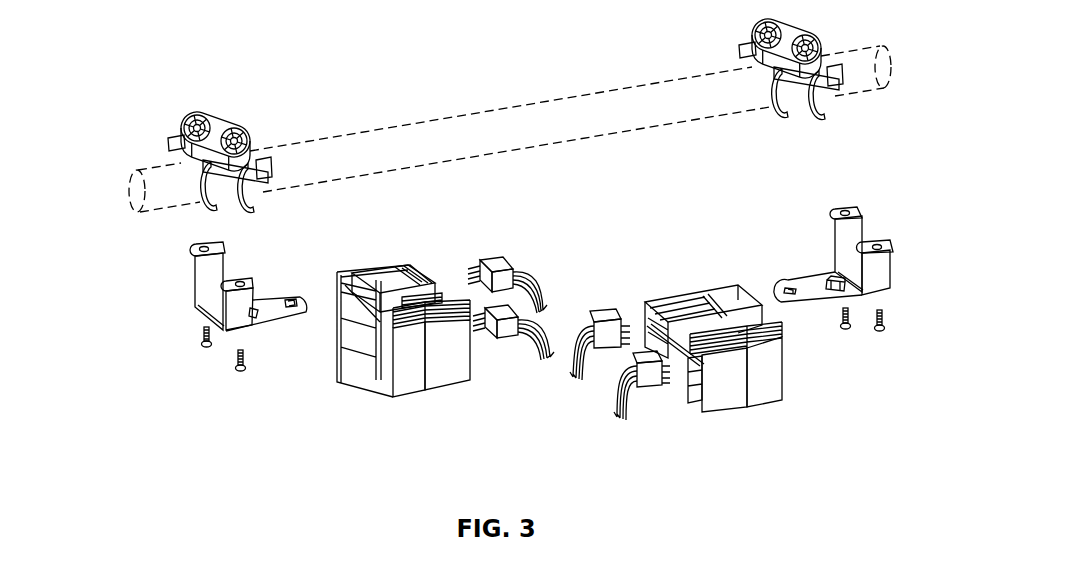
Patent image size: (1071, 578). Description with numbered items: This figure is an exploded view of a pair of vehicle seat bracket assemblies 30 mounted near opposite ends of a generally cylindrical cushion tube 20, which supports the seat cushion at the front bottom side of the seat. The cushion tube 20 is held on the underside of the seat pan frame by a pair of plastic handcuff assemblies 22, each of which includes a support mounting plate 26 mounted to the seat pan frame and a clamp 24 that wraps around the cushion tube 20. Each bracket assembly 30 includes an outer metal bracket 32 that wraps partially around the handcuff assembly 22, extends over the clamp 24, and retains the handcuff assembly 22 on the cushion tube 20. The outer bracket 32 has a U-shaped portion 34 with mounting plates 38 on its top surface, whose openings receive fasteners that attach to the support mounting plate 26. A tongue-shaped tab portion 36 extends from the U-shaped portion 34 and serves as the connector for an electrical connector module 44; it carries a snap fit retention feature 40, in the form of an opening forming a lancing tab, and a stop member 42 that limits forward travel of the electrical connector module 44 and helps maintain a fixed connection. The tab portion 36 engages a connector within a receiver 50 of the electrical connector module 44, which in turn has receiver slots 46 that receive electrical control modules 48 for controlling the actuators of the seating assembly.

The cushion tube 20 is at (519, 107).
The handcuff assembly 22 is at (478, 128).
The clamp 24 is at (257, 190).
The support mounting plate 26 is at (190, 148).
The vehicle seat bracket assembly 30 is at (188, 348).
The outer bracket 32 is at (521, 278).
The U-shaped portion 34 is at (521, 277).
The tab portion 36 is at (576, 273).
The mounting plate 38 is at (242, 281).
The snap fit retention feature 40 is at (296, 298).
The stop member 42 is at (840, 280).
The electrical connector module 44 is at (405, 380).
The receiver slot 46 is at (541, 350).
The electrical control module 48 is at (605, 318).
The receiver 50 is at (347, 277).